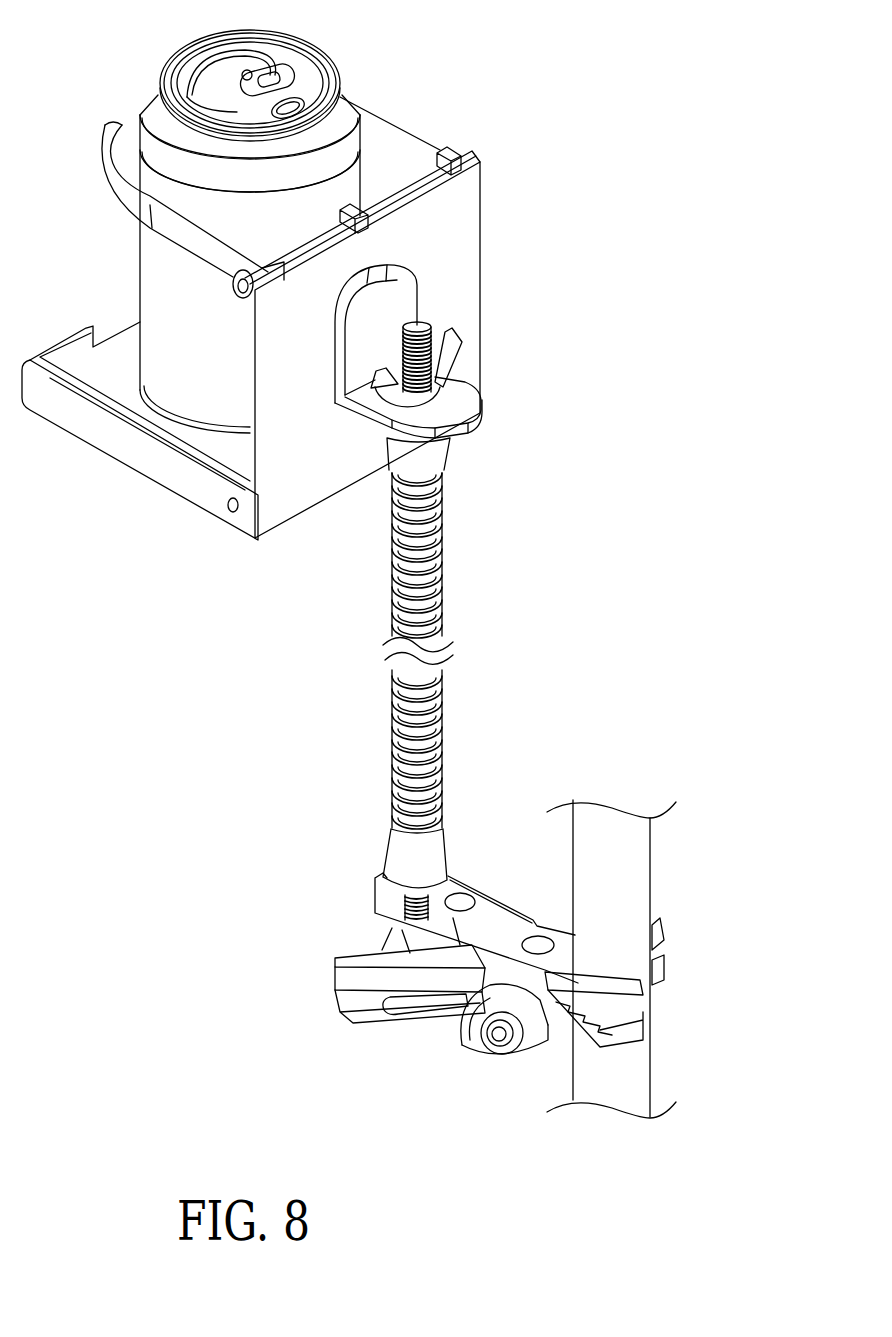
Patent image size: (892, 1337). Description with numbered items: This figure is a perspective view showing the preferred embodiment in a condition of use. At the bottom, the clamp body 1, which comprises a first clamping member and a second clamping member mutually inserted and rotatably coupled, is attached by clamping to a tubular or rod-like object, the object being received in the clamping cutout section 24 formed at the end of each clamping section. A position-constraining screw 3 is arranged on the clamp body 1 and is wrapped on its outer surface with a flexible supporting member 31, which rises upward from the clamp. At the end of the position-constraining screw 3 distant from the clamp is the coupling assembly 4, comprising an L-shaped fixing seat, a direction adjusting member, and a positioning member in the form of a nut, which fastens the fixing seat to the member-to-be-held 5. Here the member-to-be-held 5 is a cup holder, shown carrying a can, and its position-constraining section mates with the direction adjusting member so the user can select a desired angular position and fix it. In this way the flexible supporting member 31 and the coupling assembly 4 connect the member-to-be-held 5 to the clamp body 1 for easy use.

The clamp body 1 is at (481, 1014).
The clamping cutout section 24 is at (600, 980).
The position-constraining screw 3 is at (426, 679).
The flexible supporting member 31 is at (445, 535).
The coupling assembly 4 is at (341, 452).
The member-to-be-held 5 is at (480, 160).